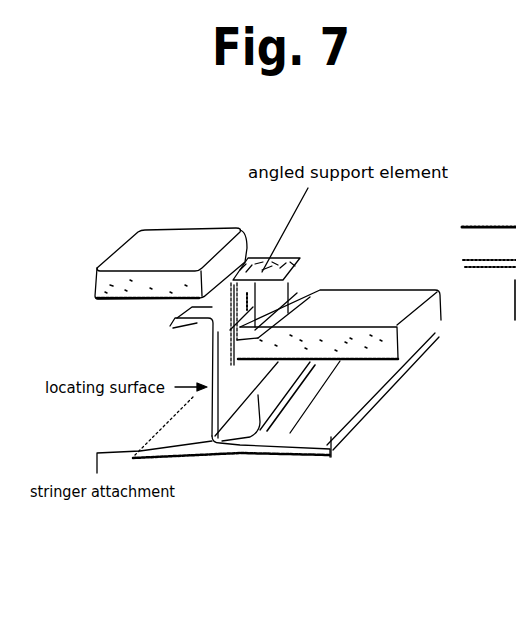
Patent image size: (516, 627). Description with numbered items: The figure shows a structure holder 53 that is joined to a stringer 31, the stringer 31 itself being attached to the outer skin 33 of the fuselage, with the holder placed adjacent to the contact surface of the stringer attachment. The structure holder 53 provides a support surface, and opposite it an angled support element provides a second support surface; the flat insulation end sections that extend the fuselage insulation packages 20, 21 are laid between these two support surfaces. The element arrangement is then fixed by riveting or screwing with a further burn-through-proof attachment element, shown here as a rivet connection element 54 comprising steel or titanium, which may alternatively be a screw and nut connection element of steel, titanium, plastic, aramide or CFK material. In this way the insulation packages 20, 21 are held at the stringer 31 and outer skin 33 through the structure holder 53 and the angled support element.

The fuselage insulation package 20 is at (395, 342).
The fuselage insulation package 21 is at (176, 247).
The stringer 31 is at (245, 378).
The outer skin 33 is at (362, 423).
The structure holder 53 is at (231, 367).
The rivet connection element 54 is at (335, 281).